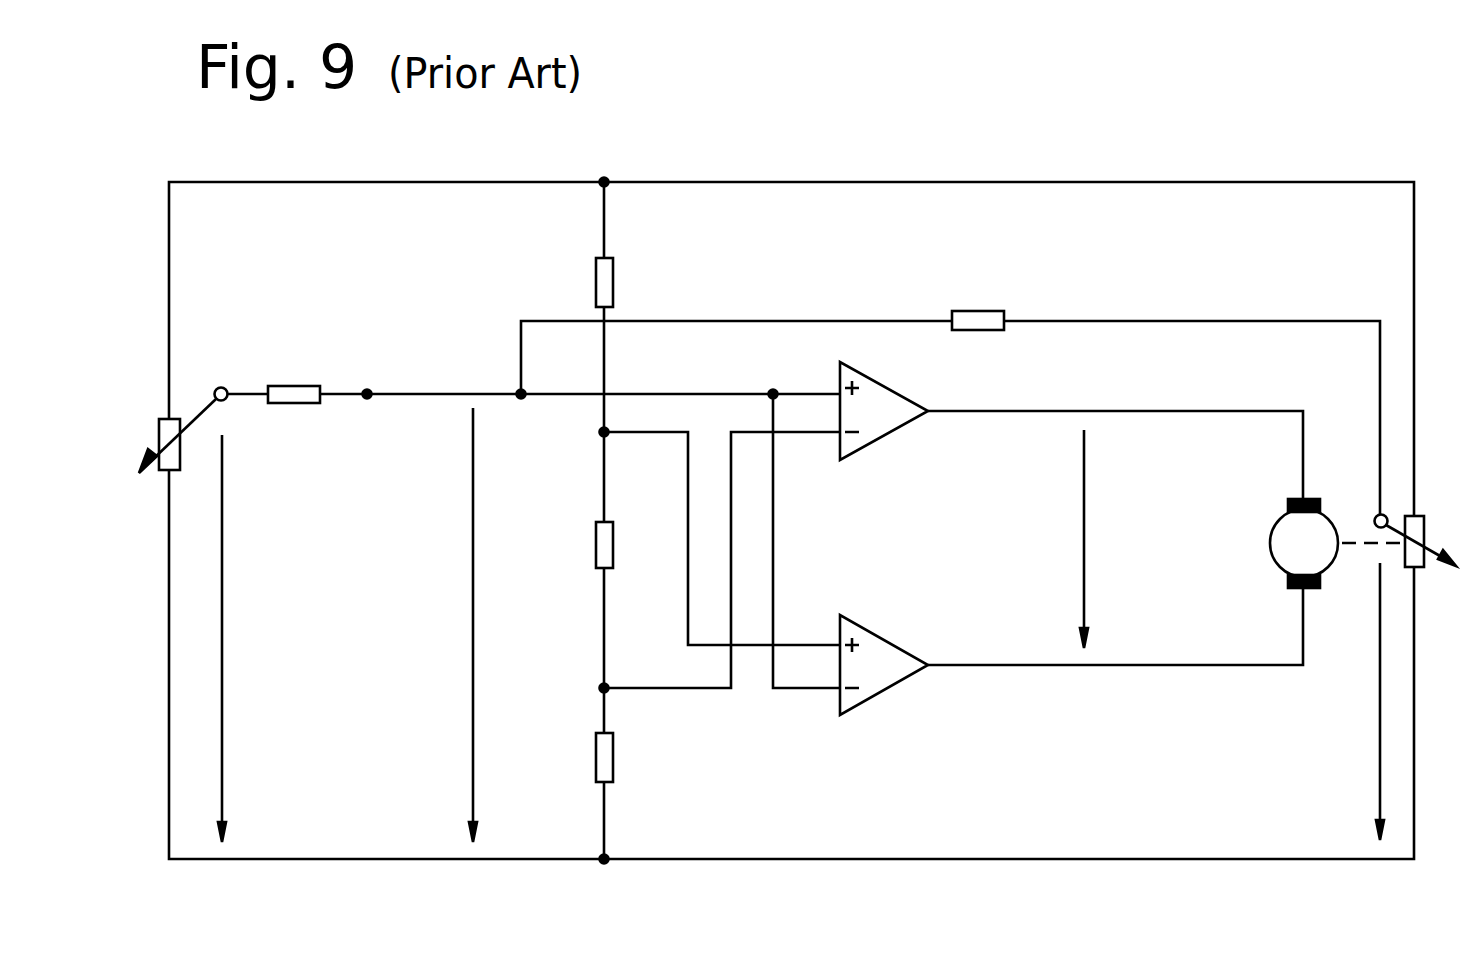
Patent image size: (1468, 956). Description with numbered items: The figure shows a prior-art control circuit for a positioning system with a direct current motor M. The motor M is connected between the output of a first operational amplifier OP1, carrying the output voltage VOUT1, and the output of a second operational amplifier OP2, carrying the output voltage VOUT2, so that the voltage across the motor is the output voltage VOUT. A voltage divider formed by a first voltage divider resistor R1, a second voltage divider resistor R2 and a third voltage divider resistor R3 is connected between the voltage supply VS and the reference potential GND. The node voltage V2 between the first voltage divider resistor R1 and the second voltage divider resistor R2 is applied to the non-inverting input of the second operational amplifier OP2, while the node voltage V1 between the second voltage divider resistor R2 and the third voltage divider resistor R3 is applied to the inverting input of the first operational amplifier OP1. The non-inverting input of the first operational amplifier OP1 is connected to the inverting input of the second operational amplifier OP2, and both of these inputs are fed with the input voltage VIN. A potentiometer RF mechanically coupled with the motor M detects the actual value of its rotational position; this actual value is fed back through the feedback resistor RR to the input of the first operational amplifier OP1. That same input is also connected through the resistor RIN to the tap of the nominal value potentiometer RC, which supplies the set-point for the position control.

The first voltage divider resistor R1 is at (628, 282).
The second voltage divider resistor R2 is at (627, 545).
The third voltage divider resistor R3 is at (627, 757).
The resistor RIN is at (294, 375).
The nominal value potentiometer RC is at (169, 431).
The feedback resistor RR is at (950, 394).
The potentiometer RF is at (1404, 536).
The first operational amplifier OP1 is at (884, 394).
The second operational amplifier OP2 is at (884, 649).
The direct current motor M is at (1304, 543).
The voltage node V1 is at (693, 570).
The voltage node V2 is at (697, 532).
The input voltage VIN is at (347, 625).
The output voltage VOUT is at (1116, 539).
The output voltage 1 VOUT1 is at (1115, 437).
The output voltage 2 VOUT2 is at (1115, 627).
The voltage supply VS is at (1120, 206).
The reference potential GND is at (986, 838).